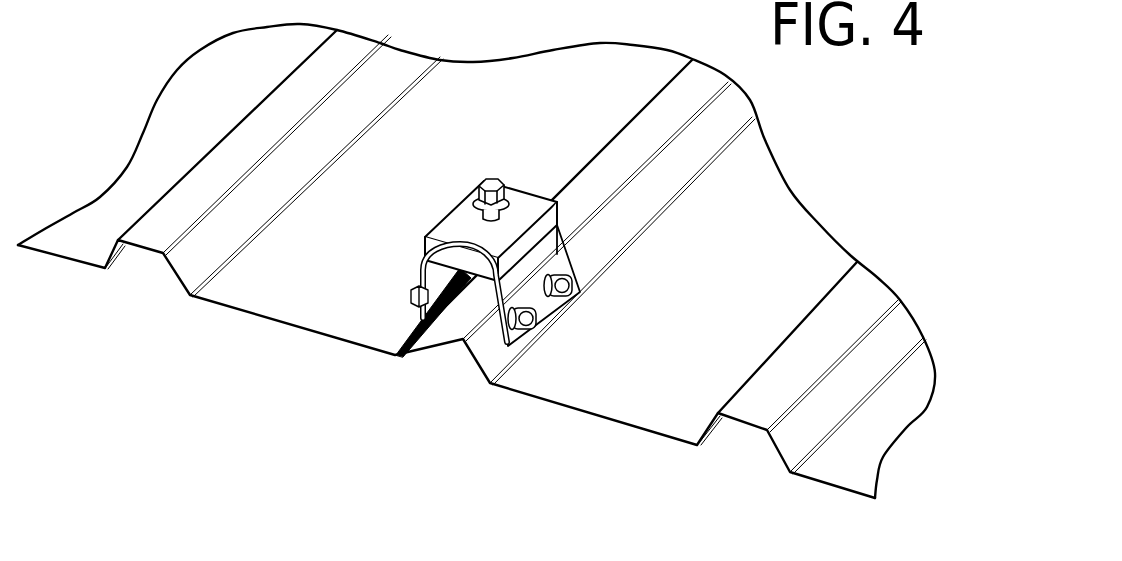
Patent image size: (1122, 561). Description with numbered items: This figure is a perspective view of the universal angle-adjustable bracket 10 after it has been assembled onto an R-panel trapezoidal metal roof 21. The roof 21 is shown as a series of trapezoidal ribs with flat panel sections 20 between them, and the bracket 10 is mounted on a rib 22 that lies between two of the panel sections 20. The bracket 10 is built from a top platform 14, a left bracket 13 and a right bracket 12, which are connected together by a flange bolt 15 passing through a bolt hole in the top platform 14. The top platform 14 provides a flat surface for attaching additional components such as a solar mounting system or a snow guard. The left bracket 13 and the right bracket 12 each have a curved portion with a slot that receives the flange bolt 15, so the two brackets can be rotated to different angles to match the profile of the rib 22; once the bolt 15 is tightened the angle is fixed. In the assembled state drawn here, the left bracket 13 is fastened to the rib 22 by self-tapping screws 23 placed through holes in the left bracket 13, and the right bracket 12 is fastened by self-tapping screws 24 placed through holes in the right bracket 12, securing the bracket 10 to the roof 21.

The universal angle-adjustable bracket 10 is at (587, 352).
The right bracket 12 is at (556, 233).
The left bracket 13 is at (425, 266).
The top platform 14 is at (443, 216).
The flange bolt 15 is at (487, 178).
The panel sections 20 is at (267, 318).
The R-panel trapezoidal metal roof 21 is at (210, 318).
The rib 22 is at (442, 335).
The self-tapping screws 23 is at (412, 286).
The self-tapping screws 24 is at (541, 331).